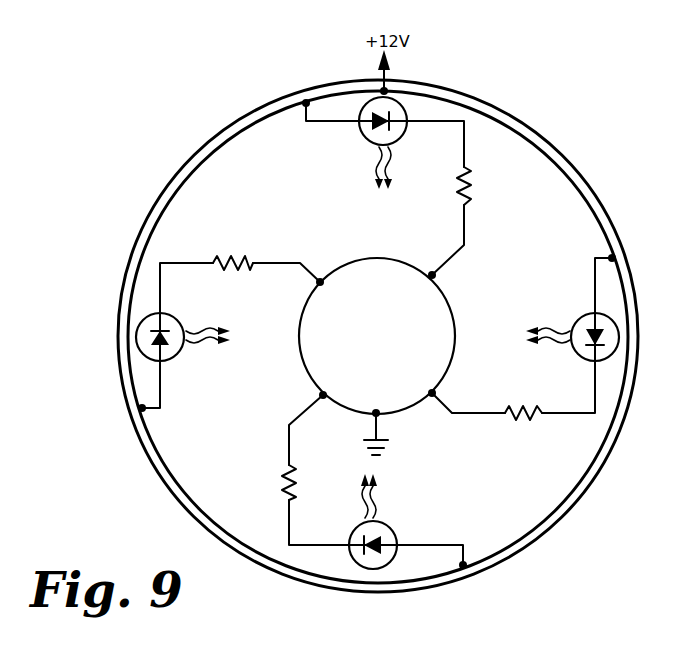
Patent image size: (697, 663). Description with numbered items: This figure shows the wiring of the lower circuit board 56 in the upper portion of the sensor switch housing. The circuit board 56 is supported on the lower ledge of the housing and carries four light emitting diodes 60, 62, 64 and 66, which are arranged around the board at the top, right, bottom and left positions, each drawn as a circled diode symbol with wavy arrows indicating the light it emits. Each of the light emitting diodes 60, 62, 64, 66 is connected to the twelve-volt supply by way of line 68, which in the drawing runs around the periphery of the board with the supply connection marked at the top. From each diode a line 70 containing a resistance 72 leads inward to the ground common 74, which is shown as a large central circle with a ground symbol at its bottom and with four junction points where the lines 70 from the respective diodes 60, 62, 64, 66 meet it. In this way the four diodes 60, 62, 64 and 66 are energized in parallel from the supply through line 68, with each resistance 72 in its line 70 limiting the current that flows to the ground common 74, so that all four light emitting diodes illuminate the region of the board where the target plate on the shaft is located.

The lower circuit board 56 is at (605, 192).
The light emitting diode 60 is at (400, 103).
The light emitting diode 62 is at (611, 356).
The light emitting diode 64 is at (388, 563).
The light emitting diode 66 is at (143, 317).
The line 68 is at (562, 160).
The line 70 is at (468, 130).
The resistance 72 is at (472, 187).
The ground common 74 is at (378, 258).